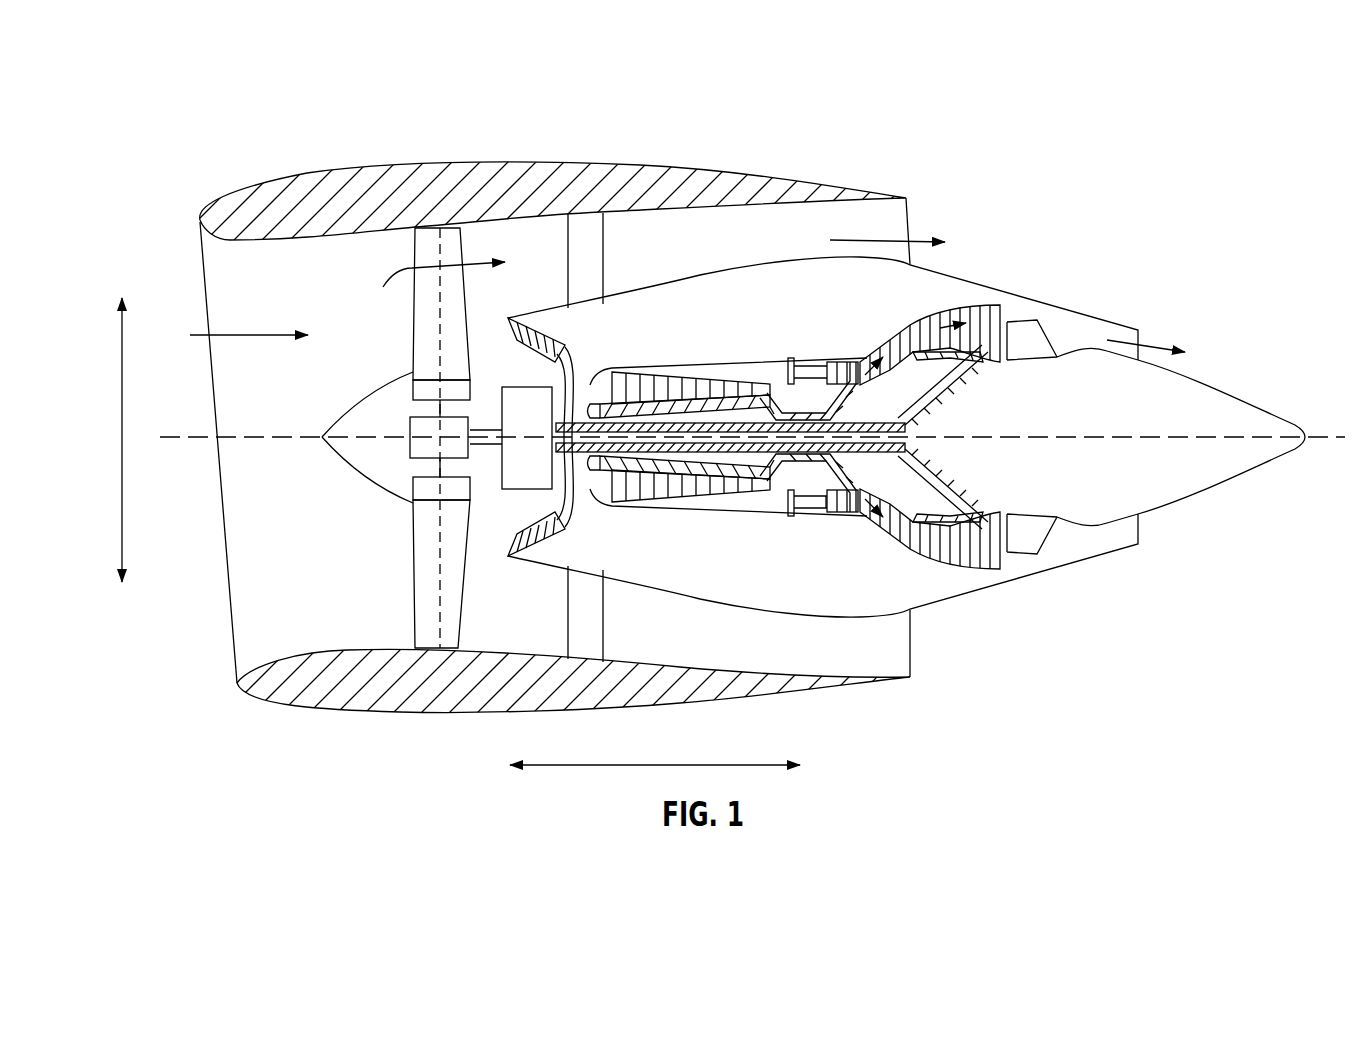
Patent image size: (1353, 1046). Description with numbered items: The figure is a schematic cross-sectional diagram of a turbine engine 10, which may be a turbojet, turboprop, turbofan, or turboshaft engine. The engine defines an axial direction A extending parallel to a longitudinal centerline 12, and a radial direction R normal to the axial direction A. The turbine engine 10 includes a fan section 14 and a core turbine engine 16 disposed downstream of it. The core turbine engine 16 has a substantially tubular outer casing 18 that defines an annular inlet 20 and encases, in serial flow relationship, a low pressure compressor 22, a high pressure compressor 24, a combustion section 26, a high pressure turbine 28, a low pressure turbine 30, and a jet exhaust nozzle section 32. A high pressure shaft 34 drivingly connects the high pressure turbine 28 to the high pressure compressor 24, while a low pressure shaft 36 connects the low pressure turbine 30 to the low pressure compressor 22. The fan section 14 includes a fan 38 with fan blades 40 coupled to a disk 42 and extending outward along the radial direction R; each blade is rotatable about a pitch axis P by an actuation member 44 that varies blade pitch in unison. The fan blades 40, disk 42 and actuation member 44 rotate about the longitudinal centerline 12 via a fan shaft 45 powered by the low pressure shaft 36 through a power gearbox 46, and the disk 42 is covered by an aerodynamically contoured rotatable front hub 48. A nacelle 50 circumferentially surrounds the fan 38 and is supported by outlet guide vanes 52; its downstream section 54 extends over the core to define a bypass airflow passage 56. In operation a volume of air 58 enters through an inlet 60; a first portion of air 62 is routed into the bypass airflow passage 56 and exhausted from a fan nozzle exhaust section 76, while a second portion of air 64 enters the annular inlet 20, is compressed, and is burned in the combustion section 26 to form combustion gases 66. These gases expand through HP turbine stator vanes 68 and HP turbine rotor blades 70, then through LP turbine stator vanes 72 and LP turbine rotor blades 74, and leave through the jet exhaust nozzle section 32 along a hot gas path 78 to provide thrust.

The turbine engine 10 is at (1084, 124).
The longitudinal centerline 12 is at (1053, 433).
The fan section 14 is at (320, 248).
The core turbine engine 16 is at (690, 311).
The outer casing 18 is at (737, 600).
The annular inlet 20 is at (510, 547).
The low pressure compressor 22 is at (573, 520).
The high pressure compressor 24 is at (620, 372).
The combustion section 26 is at (797, 495).
The high pressure turbine 28 is at (867, 507).
The low pressure turbine 30 is at (994, 567).
The jet exhaust nozzle section 32 is at (1051, 549).
The high pressure shaft 34 is at (822, 392).
The low pressure shaft 36 is at (897, 420).
The fan 38 is at (380, 497).
The fan blades 40 is at (410, 557).
The disk 42 is at (423, 385).
The actuation member 44 is at (410, 437).
The fan shaft 45 is at (485, 412).
The power gearbox 46 is at (595, 365).
The rotatable front hub 48 is at (337, 460).
The nacelle 50 is at (418, 712).
The outlet guide vanes 52 is at (607, 260).
The downstream section 54 is at (860, 193).
The bypass airflow passage 56 is at (743, 254).
The volume of air 58 is at (248, 333).
The inlet 60 is at (227, 610).
The first portion of air 62 is at (868, 238).
The second portion of air 64 is at (562, 352).
The combustion gases 66 is at (952, 322).
The HP turbine stator vanes 68 is at (827, 512).
The HP turbine rotor blades 70 is at (842, 500).
The LP turbine stator vanes 72 is at (917, 552).
The LP turbine rotor blades 74 is at (927, 555).
The fan nozzle exhaust section 76 is at (893, 223).
The hot gas path 78 is at (896, 343).
The pitch axis P is at (455, 247).
The radial direction R is at (121, 490).
The axial direction A is at (658, 760).